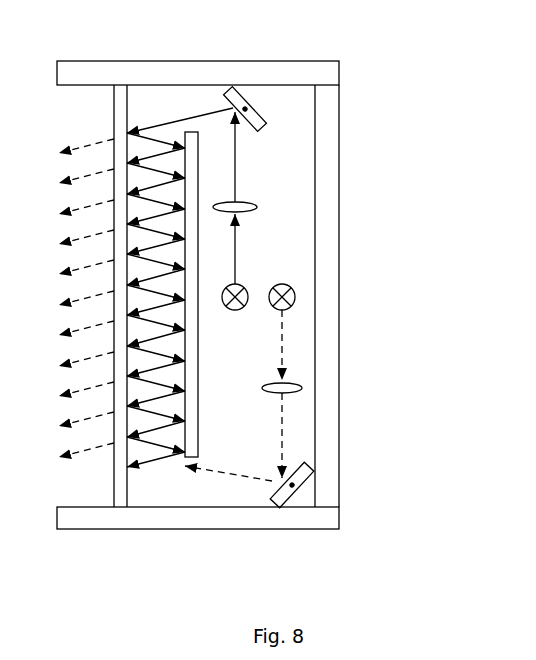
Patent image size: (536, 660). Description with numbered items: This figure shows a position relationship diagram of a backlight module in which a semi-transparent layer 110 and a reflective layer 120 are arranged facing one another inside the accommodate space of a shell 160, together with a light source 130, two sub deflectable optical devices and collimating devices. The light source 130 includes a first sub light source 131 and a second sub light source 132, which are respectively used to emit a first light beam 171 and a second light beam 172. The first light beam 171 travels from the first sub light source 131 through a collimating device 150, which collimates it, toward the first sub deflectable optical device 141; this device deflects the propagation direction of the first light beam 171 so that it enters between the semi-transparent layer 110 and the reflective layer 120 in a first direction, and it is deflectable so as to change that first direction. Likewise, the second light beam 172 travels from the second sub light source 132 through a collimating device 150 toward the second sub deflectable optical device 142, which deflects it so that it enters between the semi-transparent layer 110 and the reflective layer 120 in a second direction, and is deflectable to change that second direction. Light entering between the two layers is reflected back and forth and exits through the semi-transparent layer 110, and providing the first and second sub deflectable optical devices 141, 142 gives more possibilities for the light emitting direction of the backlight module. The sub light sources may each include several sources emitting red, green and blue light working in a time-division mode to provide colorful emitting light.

The semi-transparent layer 110 is at (198, 259).
The reflective layer 120 is at (308, 294).
The light source 130 is at (347, 272).
The first sub light source 131 is at (324, 272).
The second sub light source 132 is at (347, 286).
The first sub deflectable optical device 141 is at (325, 71).
The second sub deflectable optical device 142 is at (348, 474).
The collimating device 150 is at (319, 291).
The shell 160 is at (198, 550).
The first light beam 171 is at (330, 198).
The second light beam 172 is at (305, 395).